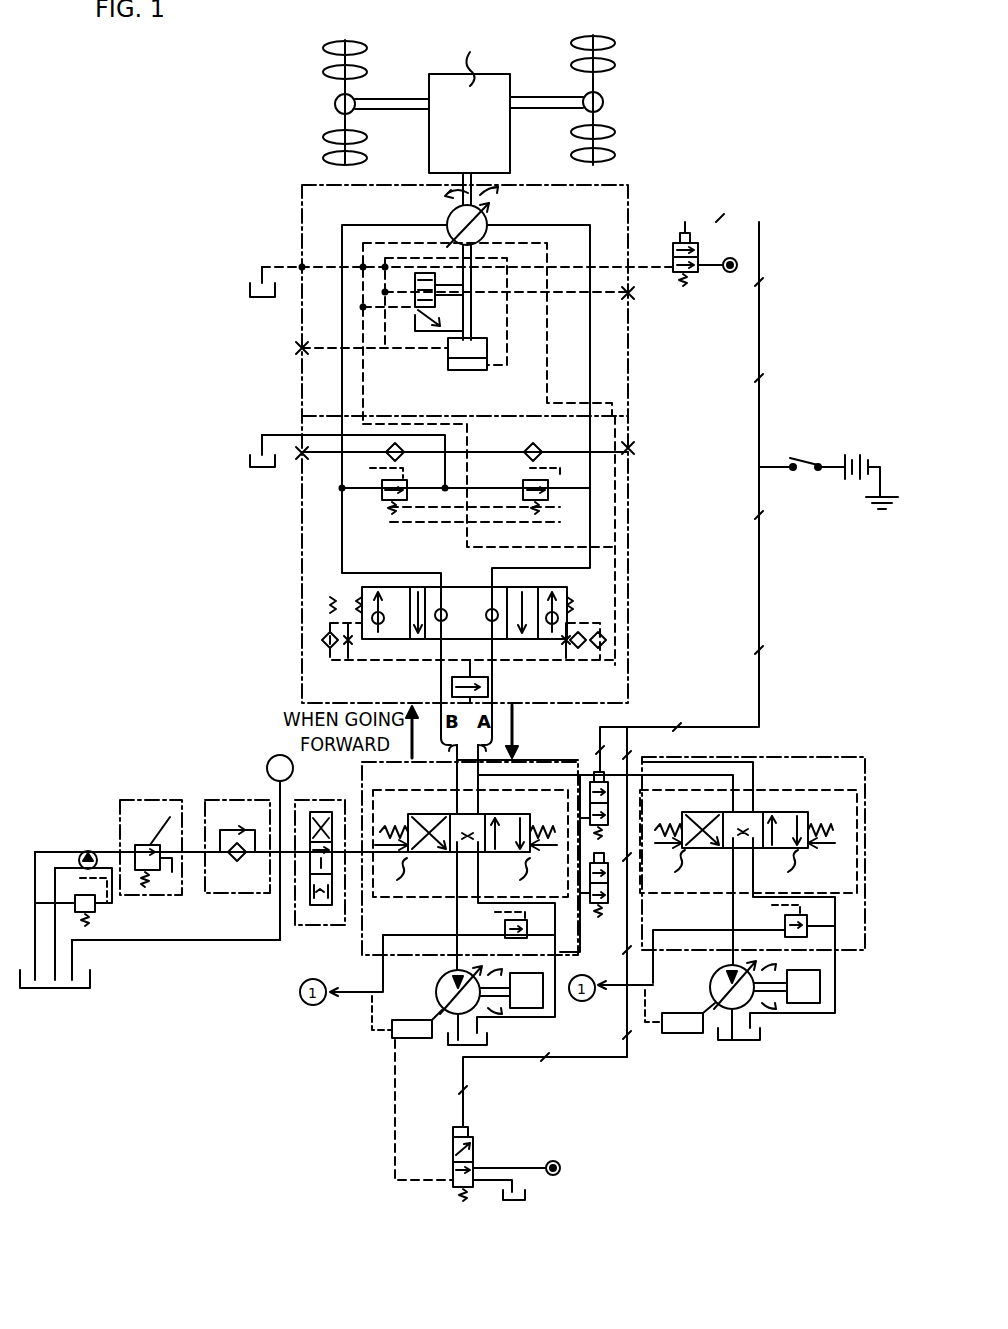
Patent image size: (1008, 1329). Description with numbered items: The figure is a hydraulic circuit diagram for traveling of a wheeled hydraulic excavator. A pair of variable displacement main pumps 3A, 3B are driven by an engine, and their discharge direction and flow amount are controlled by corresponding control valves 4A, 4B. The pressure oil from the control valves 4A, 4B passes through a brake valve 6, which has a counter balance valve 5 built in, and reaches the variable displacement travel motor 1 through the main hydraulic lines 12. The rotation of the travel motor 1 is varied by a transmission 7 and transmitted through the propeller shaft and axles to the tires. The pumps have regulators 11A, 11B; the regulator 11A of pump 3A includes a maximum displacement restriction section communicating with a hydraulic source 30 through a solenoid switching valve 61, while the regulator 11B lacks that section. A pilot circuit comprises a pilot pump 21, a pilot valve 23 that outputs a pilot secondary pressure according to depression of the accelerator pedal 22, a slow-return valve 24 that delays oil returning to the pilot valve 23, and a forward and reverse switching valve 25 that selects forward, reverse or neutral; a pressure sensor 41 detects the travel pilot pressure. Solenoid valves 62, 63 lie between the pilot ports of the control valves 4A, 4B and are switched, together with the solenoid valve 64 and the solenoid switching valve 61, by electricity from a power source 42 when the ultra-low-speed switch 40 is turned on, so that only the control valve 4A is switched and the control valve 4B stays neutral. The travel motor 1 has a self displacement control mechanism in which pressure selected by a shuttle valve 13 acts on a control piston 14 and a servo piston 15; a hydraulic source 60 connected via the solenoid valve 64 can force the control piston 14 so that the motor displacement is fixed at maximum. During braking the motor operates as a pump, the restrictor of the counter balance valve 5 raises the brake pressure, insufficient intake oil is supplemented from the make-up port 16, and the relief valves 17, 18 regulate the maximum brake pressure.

The variable displacement hydraulic motor for traveling 1 is at (487, 213).
The variable displacement main pump 3A is at (440, 982).
The variable displacement main pump 3B is at (712, 972).
The control valve 4A is at (364, 800).
The control valve 4B is at (866, 932).
The counter balance valve 5 is at (362, 605).
The brake valve 6 is at (305, 645).
The transmission 7 is at (429, 168).
The regulator 11A is at (421, 1040).
The regulator 11B is at (693, 1036).
The main hydraulic line 12 is at (492, 744).
The shuttle valve 13 is at (452, 688).
The control piston 14 is at (445, 289).
The servo piston 15 is at (448, 370).
The make-up port 16 is at (302, 435).
The relief valve 17 is at (383, 500).
The relief valve 18 is at (548, 502).
The pilot pump 21 is at (86, 848).
The accelerator pedal 22 is at (158, 816).
The pilot valve 23 is at (128, 896).
The slow-return valve 24 is at (225, 893).
The forward and reverse switching valve 25 is at (306, 927).
The hydraulic source 30 is at (558, 1160).
The ultra-low-speed switch 40 is at (807, 456).
The pressure sensor 41 is at (272, 755).
The power source 42 is at (852, 454).
The hydraulic source 60 is at (730, 276).
The solenoid switching valve 61 is at (473, 1140).
The solenoid valve 62 is at (608, 895).
The solenoid valve 63 is at (608, 795).
The solenoid valve 64 is at (673, 276).